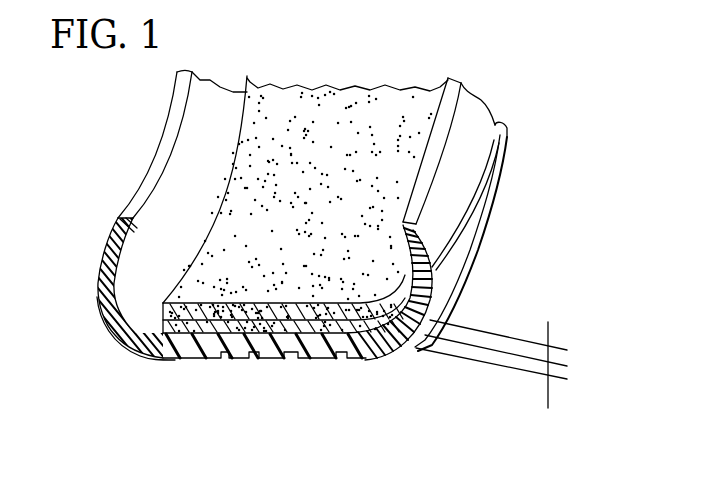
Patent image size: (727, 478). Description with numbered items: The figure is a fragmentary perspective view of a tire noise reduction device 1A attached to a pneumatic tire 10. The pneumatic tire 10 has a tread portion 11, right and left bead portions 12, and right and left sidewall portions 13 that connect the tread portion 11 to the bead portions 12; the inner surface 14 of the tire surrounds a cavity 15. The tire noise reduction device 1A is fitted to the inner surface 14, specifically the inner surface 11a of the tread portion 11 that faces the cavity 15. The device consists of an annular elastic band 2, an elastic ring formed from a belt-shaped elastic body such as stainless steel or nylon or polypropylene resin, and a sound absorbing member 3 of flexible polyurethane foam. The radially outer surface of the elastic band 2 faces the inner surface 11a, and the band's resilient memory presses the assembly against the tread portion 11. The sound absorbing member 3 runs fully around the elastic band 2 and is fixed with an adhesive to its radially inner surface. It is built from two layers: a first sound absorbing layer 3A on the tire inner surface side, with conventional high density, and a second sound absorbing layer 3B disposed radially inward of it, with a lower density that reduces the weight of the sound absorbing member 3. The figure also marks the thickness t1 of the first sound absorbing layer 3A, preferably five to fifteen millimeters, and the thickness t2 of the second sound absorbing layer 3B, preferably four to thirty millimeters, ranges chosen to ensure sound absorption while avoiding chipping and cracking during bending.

The tire noise reduction device 1A is at (392, 89).
The annular elastic band 2 is at (278, 358).
The sound absorbing member 3 is at (307, 110).
The first sound absorbing layer 3A is at (353, 332).
The second sound absorbing layer 3B is at (237, 148).
The pneumatic tire 10 is at (500, 173).
The tread portion 11 is at (268, 359).
The inner surface of the tread portion 11a is at (187, 358).
The bead portion 12 is at (455, 263).
The sidewall portion 13 is at (461, 85).
The inner surface of the tire 14 is at (139, 314).
The cavity 15 is at (188, 241).
The thickness of the first sound absorbing layer t1 is at (548, 375).
The thickness of the second sound absorbing layer t2 is at (548, 346).